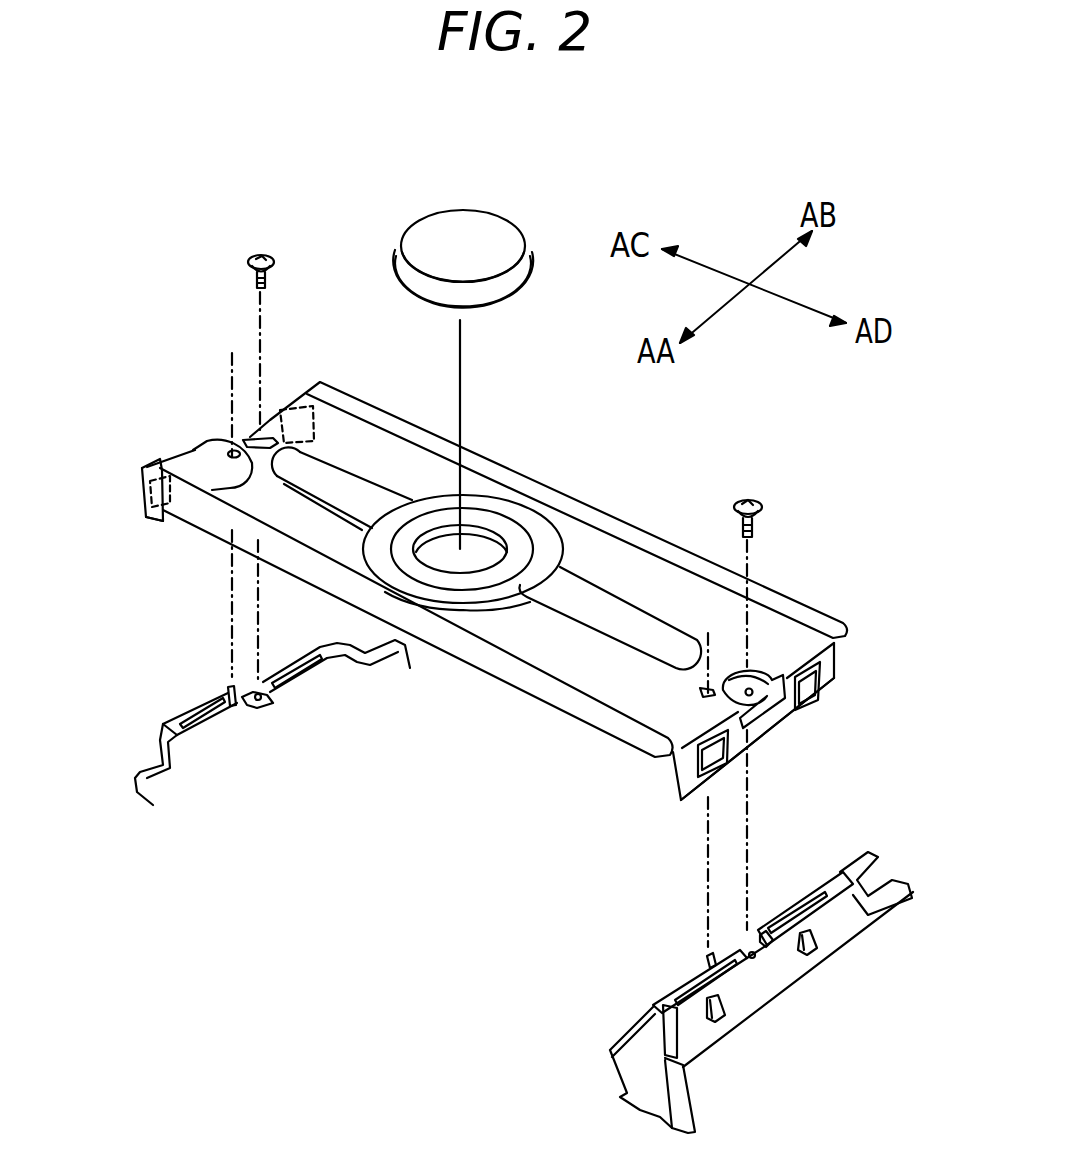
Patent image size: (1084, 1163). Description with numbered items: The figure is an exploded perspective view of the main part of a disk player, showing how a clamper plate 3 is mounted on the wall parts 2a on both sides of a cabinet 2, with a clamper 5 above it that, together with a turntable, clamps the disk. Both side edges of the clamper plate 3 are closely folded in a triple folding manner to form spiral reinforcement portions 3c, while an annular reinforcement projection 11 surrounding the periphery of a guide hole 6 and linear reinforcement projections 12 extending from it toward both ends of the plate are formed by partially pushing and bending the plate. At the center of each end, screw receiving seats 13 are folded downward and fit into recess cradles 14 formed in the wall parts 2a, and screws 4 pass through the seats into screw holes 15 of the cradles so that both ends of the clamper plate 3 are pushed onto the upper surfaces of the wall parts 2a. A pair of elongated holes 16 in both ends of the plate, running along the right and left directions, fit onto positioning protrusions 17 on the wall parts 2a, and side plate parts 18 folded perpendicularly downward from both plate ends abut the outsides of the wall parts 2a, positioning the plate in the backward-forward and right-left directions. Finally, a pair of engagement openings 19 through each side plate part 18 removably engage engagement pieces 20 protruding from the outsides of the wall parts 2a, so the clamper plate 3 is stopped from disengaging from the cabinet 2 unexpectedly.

The cabinet 2 is at (222, 812).
The wall parts 2a is at (183, 715).
The clamper plate 3 is at (532, 476).
The spiral reinforcement portions 3c is at (605, 515).
The screws 4 is at (258, 256).
The clamper 5 is at (427, 228).
The guide hole 6 is at (443, 573).
The annular reinforcement projection 11 is at (492, 500).
The linear reinforcement projections 12 is at (330, 478).
The screw receiving seats 13 is at (247, 460).
The recess cradles 14 is at (270, 703).
The screw holes 15 is at (267, 708).
The elongated holes 16 is at (193, 448).
The positioning protrusions 17 is at (230, 687).
The side plate parts 18 is at (157, 513).
The engagement openings 19 is at (290, 397).
The engagement pieces 20 is at (813, 950).